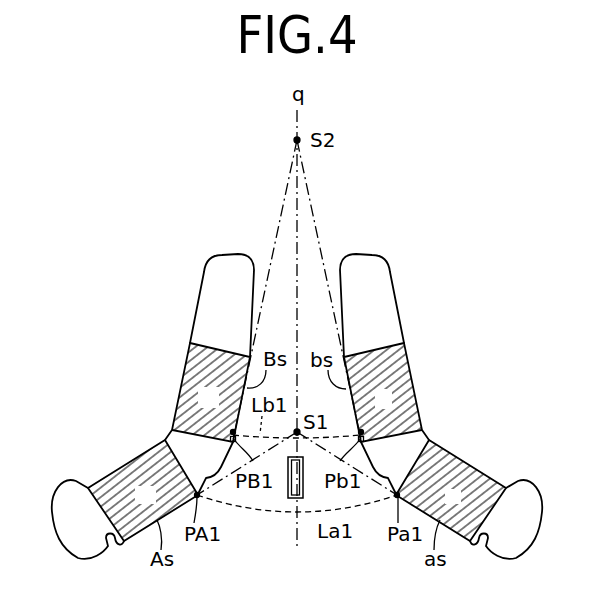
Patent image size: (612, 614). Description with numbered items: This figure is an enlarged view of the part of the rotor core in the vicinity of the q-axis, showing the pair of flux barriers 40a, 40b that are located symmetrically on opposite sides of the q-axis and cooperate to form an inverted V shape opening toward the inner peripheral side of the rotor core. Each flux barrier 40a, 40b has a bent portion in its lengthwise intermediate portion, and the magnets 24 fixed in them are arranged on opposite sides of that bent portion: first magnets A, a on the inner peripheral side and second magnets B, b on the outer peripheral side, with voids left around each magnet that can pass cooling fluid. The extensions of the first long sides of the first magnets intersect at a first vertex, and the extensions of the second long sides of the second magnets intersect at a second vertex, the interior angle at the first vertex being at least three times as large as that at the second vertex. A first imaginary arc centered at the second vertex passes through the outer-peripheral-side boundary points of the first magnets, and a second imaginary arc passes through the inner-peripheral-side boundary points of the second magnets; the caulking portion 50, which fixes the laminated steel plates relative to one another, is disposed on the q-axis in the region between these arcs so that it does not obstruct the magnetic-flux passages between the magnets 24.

The magnet 24 is at (452, 473).
The flux barrier 40a is at (228, 258).
The flux barrier 40b is at (360, 258).
The caulking portion 50 is at (288, 497).